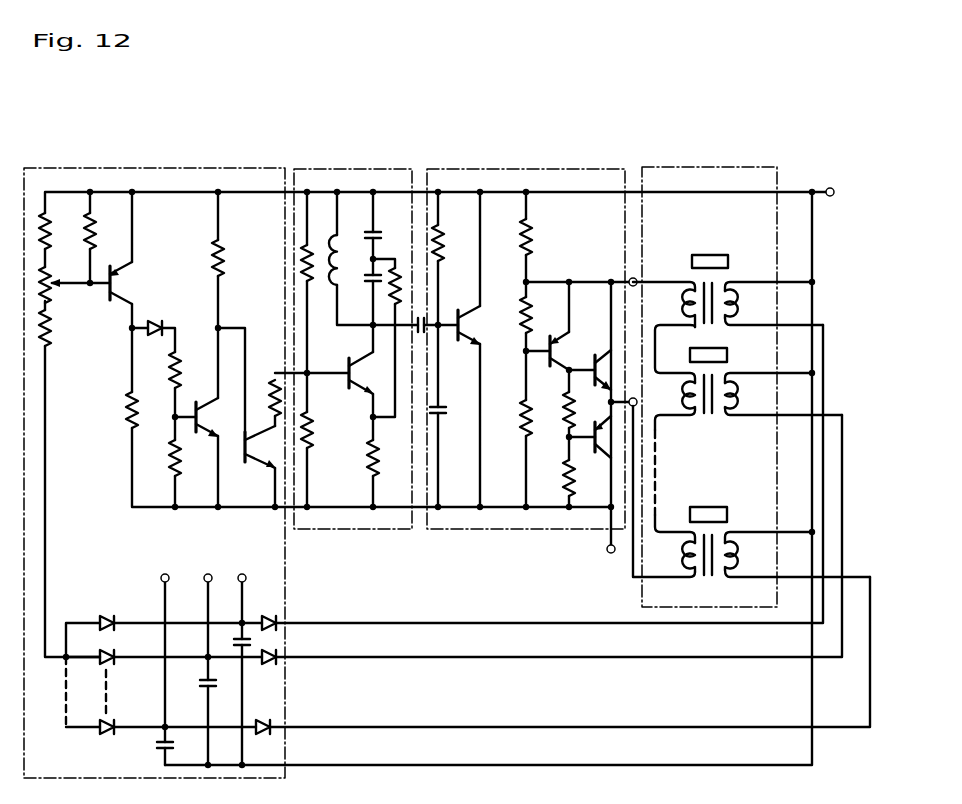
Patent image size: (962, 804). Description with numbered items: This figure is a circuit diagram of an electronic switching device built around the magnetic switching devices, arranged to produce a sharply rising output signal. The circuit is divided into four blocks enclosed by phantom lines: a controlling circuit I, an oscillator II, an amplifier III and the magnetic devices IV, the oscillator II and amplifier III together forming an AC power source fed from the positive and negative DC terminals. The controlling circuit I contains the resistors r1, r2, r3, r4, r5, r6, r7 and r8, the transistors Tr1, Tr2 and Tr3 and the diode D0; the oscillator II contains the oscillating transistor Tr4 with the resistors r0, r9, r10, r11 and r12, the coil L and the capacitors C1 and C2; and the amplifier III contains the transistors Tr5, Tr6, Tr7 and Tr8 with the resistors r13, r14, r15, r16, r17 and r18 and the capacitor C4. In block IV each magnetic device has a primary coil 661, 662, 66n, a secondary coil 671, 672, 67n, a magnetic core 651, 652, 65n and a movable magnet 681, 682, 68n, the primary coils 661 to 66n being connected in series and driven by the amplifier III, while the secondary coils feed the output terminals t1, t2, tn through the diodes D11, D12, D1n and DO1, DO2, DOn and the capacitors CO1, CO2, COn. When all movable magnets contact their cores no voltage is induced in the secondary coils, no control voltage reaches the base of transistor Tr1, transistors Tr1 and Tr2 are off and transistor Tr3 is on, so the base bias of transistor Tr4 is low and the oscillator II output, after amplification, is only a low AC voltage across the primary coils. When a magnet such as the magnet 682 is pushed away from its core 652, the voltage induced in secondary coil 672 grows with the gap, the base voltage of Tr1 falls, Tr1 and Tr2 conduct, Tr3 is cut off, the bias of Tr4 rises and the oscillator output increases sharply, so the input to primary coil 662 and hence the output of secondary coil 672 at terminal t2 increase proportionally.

The controlling circuit I is at (113, 180).
The oscillator II is at (318, 180).
The amplifier III is at (468, 180).
The magnetic devices IV is at (660, 170).
The resistor r1 is at (50, 234).
The resistor r2 is at (51, 331).
The resistor r3 is at (53, 279).
The resistor r4 is at (96, 232).
The resistor r5 is at (136, 414).
The resistor r6 is at (179, 374).
The resistor r7 is at (180, 463).
The resistor r8 is at (224, 259).
The resistor r0 is at (272, 396).
The resistor r9 is at (311, 287).
The resistor r10 is at (312, 429).
The resistor r11 is at (400, 284).
The resistor r12 is at (368, 456).
The resistor r13 is at (442, 249).
The resistor r14 is at (533, 239).
The resistor r15 is at (531, 318).
The resistor r16 is at (522, 428).
The resistor r17 is at (575, 410).
The resistor r18 is at (566, 466).
The transistor Tr1 is at (126, 282).
The transistor Tr2 is at (198, 417).
The transistor Tr3 is at (256, 461).
The oscillating transistor Tr4 is at (358, 383).
The transistor Tr5 is at (470, 326).
The transistor Tr6 is at (555, 345).
The transistor Tr7 is at (603, 362).
The transistor Tr8 is at (603, 453).
The diode D0 is at (156, 327).
The inductor L is at (339, 257).
The capacitor C1 is at (375, 233).
The capacitor C2 is at (371, 285).
The capacitor C4 is at (447, 412).
The primary coil 661 is at (688, 304).
The primary coil 662 is at (688, 395).
The primary coil 66n is at (688, 556).
The secondary coil 671 is at (731, 303).
The secondary coil 672 is at (732, 402).
The secondary coil 67n is at (732, 556).
The magnetic core 651 is at (725, 284).
The magnetic core 652 is at (722, 373).
The magnetic core 65n is at (723, 532).
The movable magnet 681 is at (716, 256).
The movable magnet 682 is at (717, 349).
The movable magnet 68n is at (709, 507).
The output terminal tn is at (167, 573).
The output terminal t2 is at (210, 573).
The output terminal t1 is at (244, 573).
The diode D11 is at (108, 618).
The diode D12 is at (112, 653).
The diode D1n is at (112, 723).
The diode DO1 is at (269, 617).
The diode DO2 is at (266, 663).
The diode DOn is at (273, 722).
The capacitor CO1 is at (232, 640).
The capacitor CO2 is at (214, 684).
The capacitor COn is at (157, 747).